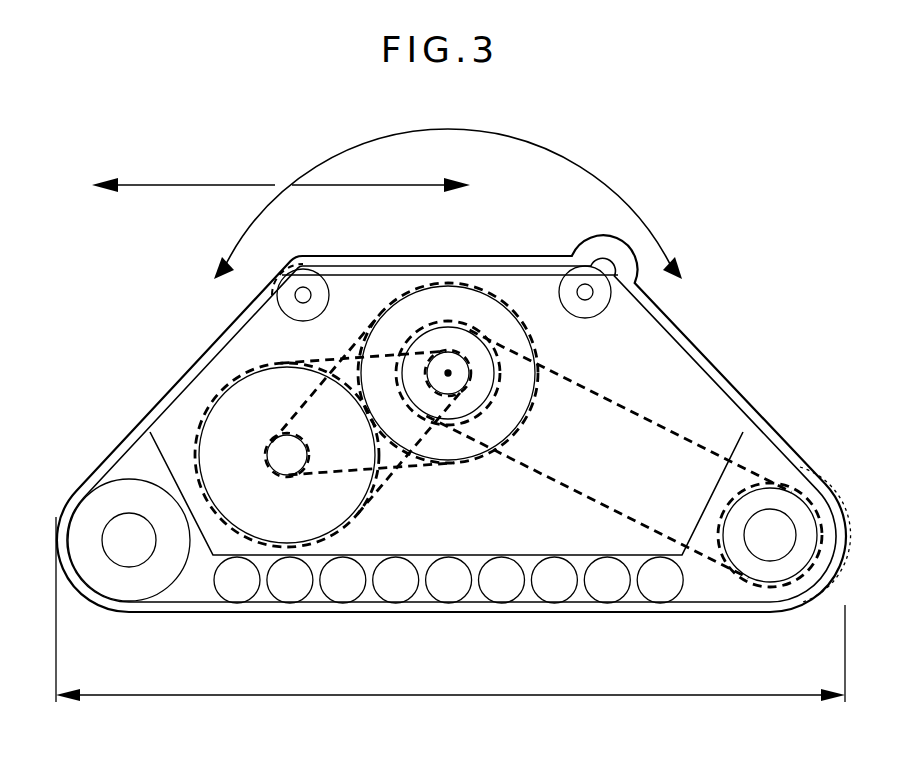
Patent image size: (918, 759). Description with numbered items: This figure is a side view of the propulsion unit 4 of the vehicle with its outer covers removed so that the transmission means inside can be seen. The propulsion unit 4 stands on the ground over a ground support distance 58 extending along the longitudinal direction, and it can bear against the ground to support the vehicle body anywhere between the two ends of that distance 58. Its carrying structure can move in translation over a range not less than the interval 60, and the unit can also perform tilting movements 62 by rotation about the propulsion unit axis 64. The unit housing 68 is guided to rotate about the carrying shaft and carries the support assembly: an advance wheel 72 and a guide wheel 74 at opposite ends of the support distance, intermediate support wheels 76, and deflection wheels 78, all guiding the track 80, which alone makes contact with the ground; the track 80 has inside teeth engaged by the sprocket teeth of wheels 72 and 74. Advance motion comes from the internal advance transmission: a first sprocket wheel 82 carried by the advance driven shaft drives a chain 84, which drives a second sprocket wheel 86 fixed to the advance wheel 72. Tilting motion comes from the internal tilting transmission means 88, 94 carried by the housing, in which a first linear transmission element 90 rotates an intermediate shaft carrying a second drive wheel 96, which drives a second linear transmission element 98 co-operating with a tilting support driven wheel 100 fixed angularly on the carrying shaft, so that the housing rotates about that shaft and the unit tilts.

The propulsion unit 4 is at (178, 349).
The ground support distance 58 is at (490, 692).
The interval 60 is at (200, 183).
The tilting movements 62 is at (327, 157).
The propulsion unit axis 64 is at (466, 380).
The unit housing 68 is at (667, 337).
The advance wheel 72 is at (789, 612).
The guide wheel 74 is at (125, 614).
The intermediate support wheels 76 is at (468, 548).
The deflection wheels 78 is at (318, 272).
The track 80 is at (715, 373).
The first sprocket wheel 82 is at (497, 372).
The chain 84 is at (705, 447).
The second sprocket wheel 86 is at (800, 467).
The internal tilting transmission means 88 is at (438, 381).
The first linear transmission element 90 is at (381, 356).
The internal tilting transmission means 94 is at (327, 366).
The second drive wheel 96 is at (306, 462).
The second linear transmission element 98 is at (335, 488).
The tilting support driven wheel 100 is at (392, 478).